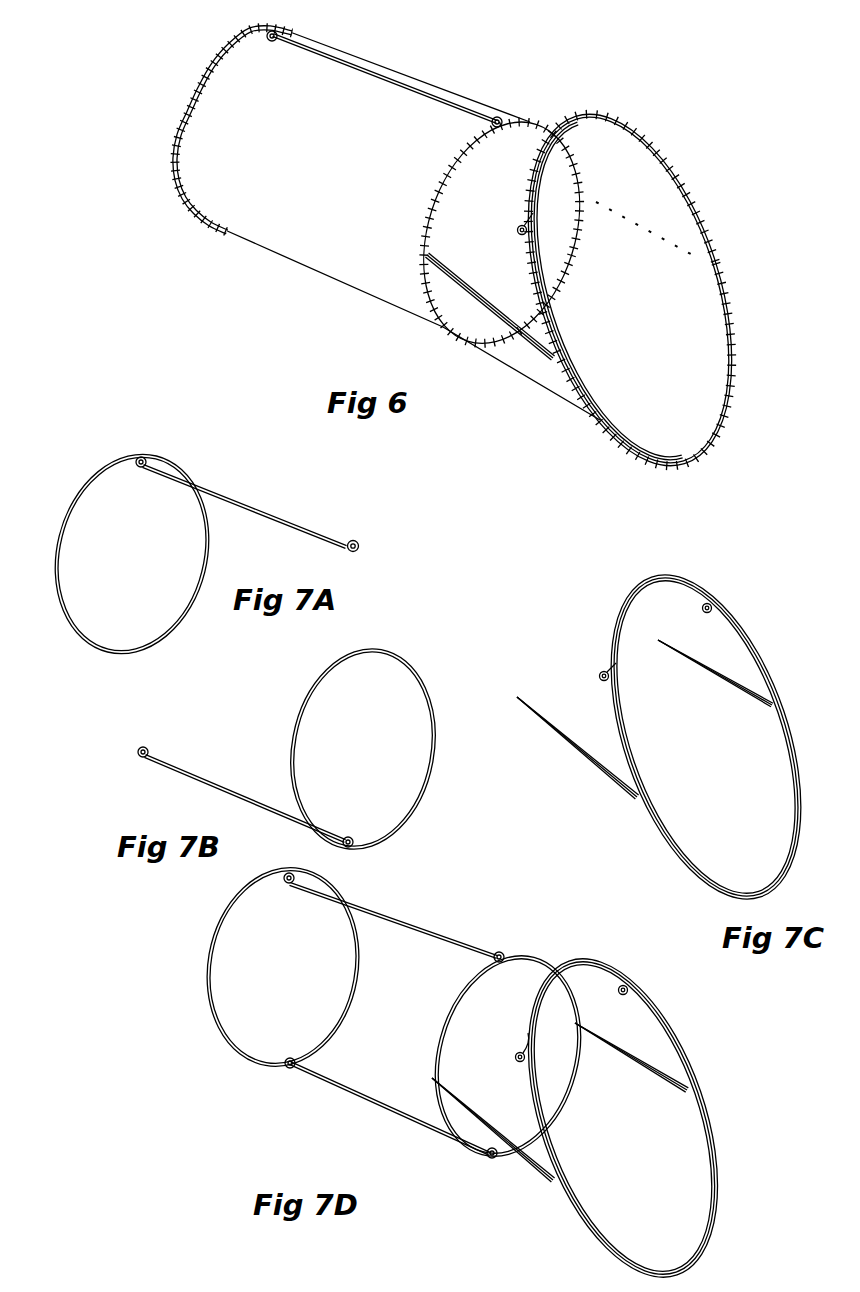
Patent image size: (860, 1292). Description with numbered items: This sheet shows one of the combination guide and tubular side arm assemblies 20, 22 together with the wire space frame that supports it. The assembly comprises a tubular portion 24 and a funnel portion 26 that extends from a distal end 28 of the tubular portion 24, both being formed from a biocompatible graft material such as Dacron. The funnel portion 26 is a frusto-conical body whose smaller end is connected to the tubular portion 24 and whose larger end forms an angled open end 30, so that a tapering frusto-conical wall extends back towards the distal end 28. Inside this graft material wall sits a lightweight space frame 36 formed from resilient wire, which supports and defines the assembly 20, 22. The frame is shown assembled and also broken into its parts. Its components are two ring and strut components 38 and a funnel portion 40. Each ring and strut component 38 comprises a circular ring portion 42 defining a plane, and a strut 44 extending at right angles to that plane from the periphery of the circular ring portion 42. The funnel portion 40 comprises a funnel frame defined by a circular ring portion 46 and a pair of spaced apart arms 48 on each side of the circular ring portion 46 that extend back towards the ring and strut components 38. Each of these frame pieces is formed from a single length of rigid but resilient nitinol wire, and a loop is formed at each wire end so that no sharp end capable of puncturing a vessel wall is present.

In FIG. 6, the combination guide and tubular side arm assembly 20 is at (486, 259).
In FIG. 6, the combination guide and tubular side arm assembly 22 is at (436, 224).
In FIG. 6, the tubular portion 24 is at (291, 234).
In FIG. 6, the funnel portion 26 is at (683, 351).
In FIG. 6, the distal end 28 is at (538, 121).
In FIG. 6, the angled open end 30 is at (713, 263).
In FIG. 7D, the lightweight space frame 36 is at (420, 1073).
In FIG. 7A, the ring and strut component 38 is at (125, 570).
In FIG. 7B, the ring and strut component 38 is at (376, 730).
In FIG. 7D, the ring and strut component 38 is at (370, 1051).
In FIG. 7C, the funnel portion 40 is at (706, 737).
In FIG. 7D, the funnel portion 40 is at (622, 1113).
In FIG. 7A, the circular ring portion 42 is at (68, 527).
In FIG. 7B, the circular ring portion 42 is at (418, 778).
In FIG. 7D, the circular ring portion 42 is at (216, 941).
In FIG. 7A, the strut 44 is at (264, 510).
In FIG. 7B, the strut 44 is at (201, 778).
In FIG. 7D, the strut 44 is at (404, 921).
In FIG. 7C, the circular ring portion 46 is at (785, 776).
In FIG. 7D, the circular ring portion 46 is at (705, 1160).
In FIG. 7C, the spaced apart arms 48 is at (561, 736).
In FIG. 7D, the spaced apart arms 48 is at (452, 1102).